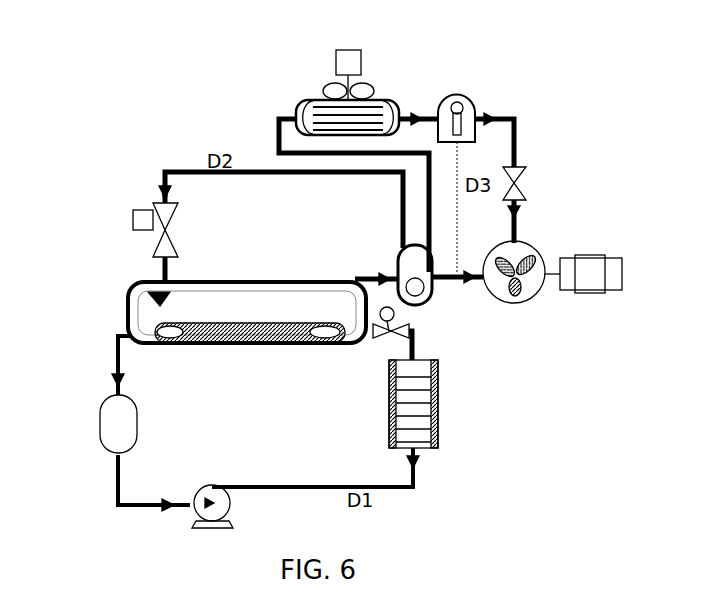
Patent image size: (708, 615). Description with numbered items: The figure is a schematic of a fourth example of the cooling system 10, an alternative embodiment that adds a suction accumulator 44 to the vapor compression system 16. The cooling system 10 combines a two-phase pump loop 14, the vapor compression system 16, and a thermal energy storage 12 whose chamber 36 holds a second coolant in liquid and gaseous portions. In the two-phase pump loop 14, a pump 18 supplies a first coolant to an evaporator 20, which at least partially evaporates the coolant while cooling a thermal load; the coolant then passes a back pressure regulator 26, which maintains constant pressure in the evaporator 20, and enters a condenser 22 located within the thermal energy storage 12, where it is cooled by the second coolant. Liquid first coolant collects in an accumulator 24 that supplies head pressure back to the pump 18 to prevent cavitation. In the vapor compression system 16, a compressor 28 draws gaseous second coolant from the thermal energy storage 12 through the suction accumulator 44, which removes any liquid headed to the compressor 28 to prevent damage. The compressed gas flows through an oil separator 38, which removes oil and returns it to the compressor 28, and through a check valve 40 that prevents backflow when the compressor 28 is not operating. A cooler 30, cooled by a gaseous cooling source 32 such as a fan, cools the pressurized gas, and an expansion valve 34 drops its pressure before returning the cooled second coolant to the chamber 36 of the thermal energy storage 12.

The cooling system 10 is at (40, 108).
The thermal energy storage 12 is at (216, 311).
The two-phase pump loop 14 is at (103, 515).
The vapor compression system 16 is at (124, 143).
The pump 18 is at (231, 505).
The evaporator 20 is at (438, 443).
The condenser 22 is at (165, 343).
The accumulator 24 is at (100, 420).
The back pressure regulator 26 is at (379, 336).
The compressor 28 is at (529, 297).
The cooler 30 is at (383, 100).
The gaseous cooling source 32 is at (354, 47).
The expansion valve 34 is at (134, 211).
The chamber 36 is at (253, 308).
The oil separator 38 is at (467, 95).
The check valve 40 is at (519, 180).
The suction accumulator 44 is at (427, 300).